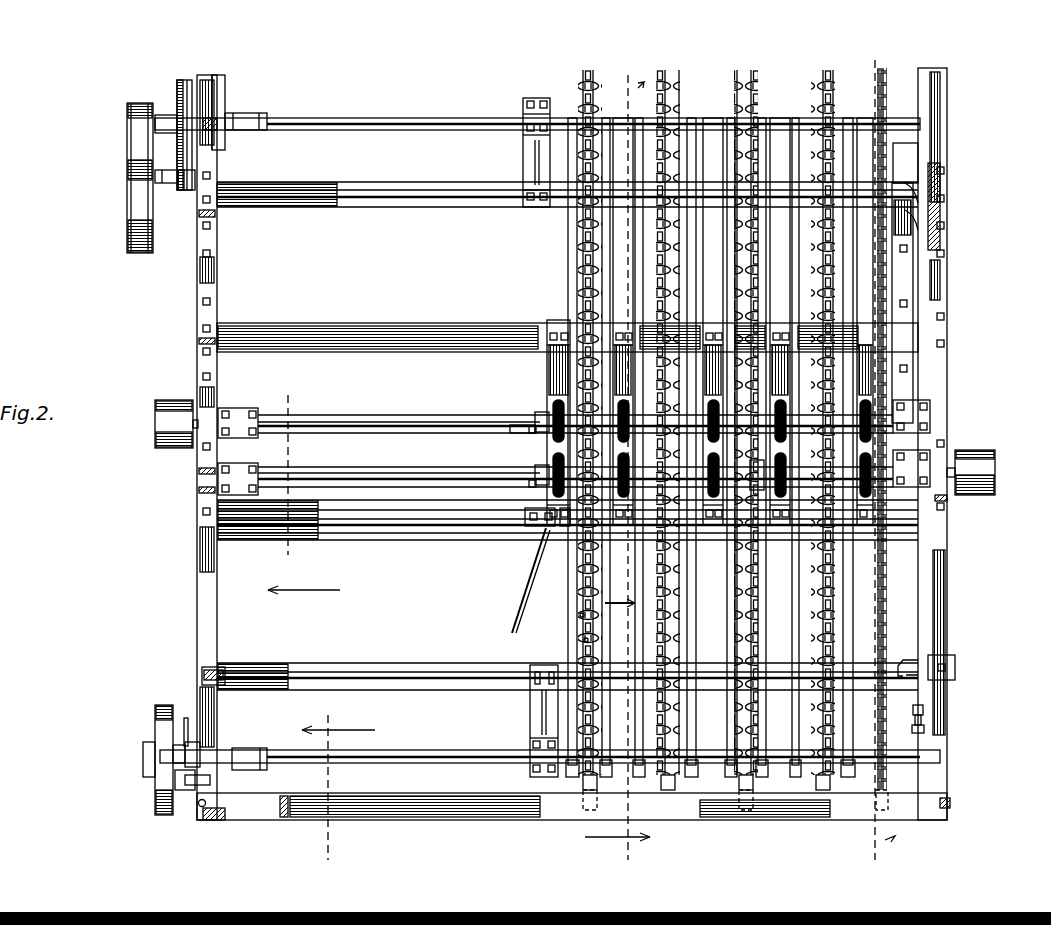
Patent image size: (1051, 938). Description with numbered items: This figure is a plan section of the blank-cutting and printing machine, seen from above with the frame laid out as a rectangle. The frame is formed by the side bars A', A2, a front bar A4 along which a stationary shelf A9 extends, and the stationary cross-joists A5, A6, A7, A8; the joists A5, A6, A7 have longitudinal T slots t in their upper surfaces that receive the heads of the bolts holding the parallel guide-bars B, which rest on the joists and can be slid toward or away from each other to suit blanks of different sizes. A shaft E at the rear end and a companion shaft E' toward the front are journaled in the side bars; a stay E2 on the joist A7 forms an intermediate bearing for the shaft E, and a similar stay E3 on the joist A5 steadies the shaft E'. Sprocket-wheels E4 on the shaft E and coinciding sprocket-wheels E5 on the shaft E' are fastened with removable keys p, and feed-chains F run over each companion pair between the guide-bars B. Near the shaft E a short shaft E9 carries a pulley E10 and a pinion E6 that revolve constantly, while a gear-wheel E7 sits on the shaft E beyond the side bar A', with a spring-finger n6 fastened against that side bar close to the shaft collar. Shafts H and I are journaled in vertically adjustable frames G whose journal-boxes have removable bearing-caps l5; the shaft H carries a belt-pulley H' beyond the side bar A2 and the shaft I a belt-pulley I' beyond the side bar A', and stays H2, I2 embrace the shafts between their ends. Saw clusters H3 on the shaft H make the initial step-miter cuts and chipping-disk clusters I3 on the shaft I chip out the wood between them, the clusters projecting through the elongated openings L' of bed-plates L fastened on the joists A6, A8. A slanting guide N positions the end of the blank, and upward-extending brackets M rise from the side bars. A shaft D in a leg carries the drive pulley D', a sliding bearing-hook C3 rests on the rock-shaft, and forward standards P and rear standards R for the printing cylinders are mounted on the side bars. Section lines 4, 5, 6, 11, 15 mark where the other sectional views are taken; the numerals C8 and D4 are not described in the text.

The side bar A' is at (179, 447).
The side bar A2 is at (950, 598).
The front bar A4 is at (945, 810).
The cross-joist A5 is at (475, 666).
The cross-joist A6 is at (412, 532).
The cross-joist A7 is at (395, 210).
The cross-joist A8 is at (443, 325).
The stationary shelf A9 is at (306, 805).
The guide-bars B is at (855, 250).
The sliding bearing-hook C3 is at (200, 808).
The crank arm C8 is at (178, 780).
The shaft D is at (139, 760).
The pulley D' is at (161, 772).
The bearing block D4 is at (185, 720).
The shaft E is at (537, 110).
The companion shaft E' is at (550, 427).
The stay E2 is at (523, 160).
The stay E3 is at (530, 714).
The sprocket-wheels E4 is at (818, 93).
The sprocket-wheels E5 is at (597, 785).
The pinion E6 is at (197, 178).
The gear-wheel E7 is at (177, 98).
The short shaft E9 is at (167, 185).
The pulley E10 is at (140, 222).
The feed-chains F is at (580, 578).
The frame G is at (347, 416).
The shaft H is at (399, 458).
The belt-pulley H' is at (979, 451).
The stay H2 is at (540, 508).
The saw clusters H3 is at (548, 484).
The shaft I is at (399, 404).
The belt-pulley I' is at (176, 407).
The stay I2 is at (535, 420).
The clusters of chipping-disks I3 is at (548, 430).
The bed-plate L is at (690, 321).
The elongated openings L' is at (694, 464).
The brackets M is at (204, 488).
The slanting guide N is at (522, 598).
The forward cheeks or standards P is at (210, 366).
The rear cheeks or standards R is at (218, 233).
The bearing-cap l5 is at (240, 468).
The spring-finger n6 is at (210, 120).
The removable keys p is at (580, 616).
The T slots or recesses t is at (337, 192).
The section line 4 is at (762, 462).
The section line 5 is at (620, 614).
The section line 6 is at (617, 469).
The section line 11 is at (304, 507).
The section line 15 is at (338, 778).